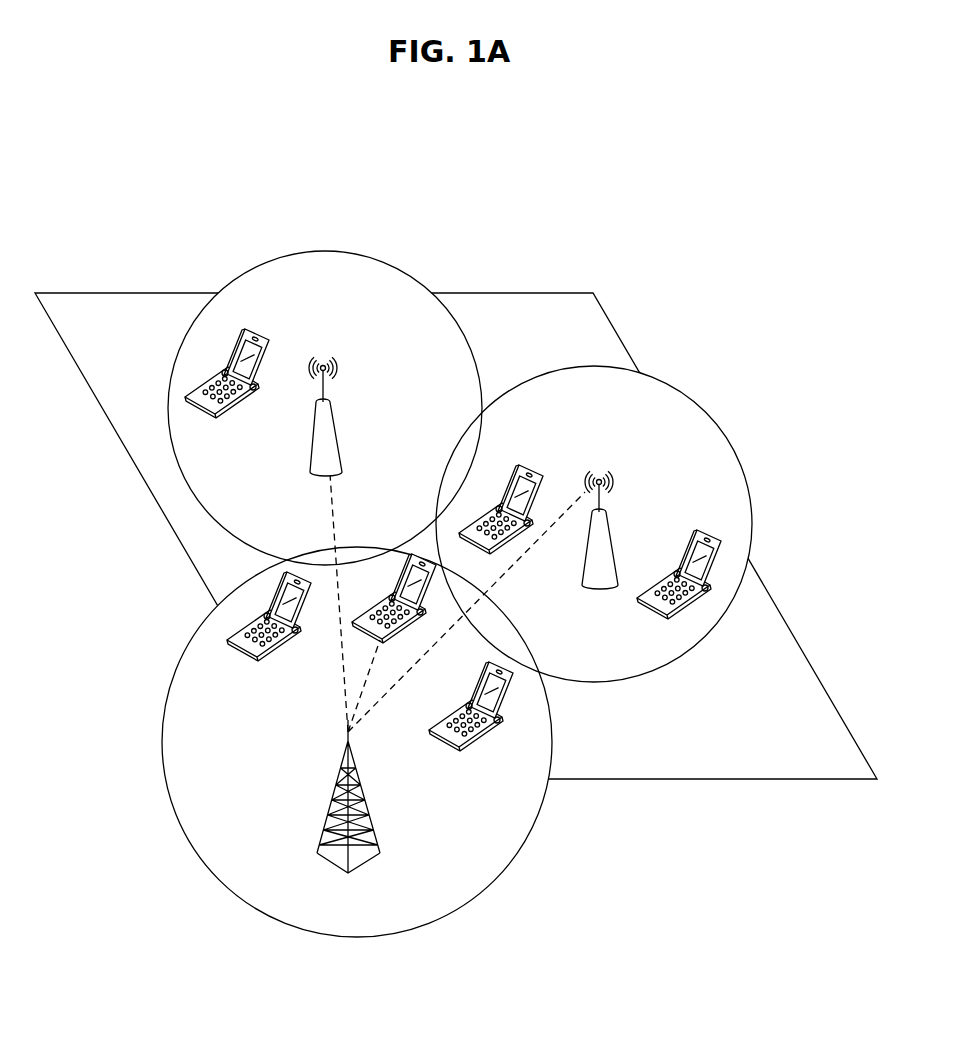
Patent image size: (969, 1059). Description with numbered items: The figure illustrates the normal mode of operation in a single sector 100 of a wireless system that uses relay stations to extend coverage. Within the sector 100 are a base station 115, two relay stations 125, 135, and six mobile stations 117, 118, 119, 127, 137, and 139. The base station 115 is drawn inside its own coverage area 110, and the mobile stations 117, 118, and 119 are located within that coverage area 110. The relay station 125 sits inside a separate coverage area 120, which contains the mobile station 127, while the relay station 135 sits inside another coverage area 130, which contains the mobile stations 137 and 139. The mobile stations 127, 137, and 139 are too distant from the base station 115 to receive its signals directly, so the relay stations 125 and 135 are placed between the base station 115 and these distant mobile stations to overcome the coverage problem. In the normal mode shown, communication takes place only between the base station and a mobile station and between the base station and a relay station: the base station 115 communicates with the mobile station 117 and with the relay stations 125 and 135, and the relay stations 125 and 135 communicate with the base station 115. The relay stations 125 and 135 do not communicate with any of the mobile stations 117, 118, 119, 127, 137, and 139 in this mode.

The sector 100 is at (712, 780).
The coverage area of the base station 110 is at (167, 672).
The base station 115 is at (322, 837).
The mobile station 117 is at (347, 628).
The mobile station 118 is at (235, 655).
The mobile station 119 is at (440, 745).
The coverage area of the relay station 120 is at (373, 255).
The relay station 125 is at (315, 447).
The mobile station 127 is at (263, 325).
The coverage area of the relay station 130 is at (675, 385).
The relay station 135 is at (597, 585).
The mobile station 137 is at (532, 457).
The mobile station 139 is at (697, 523).